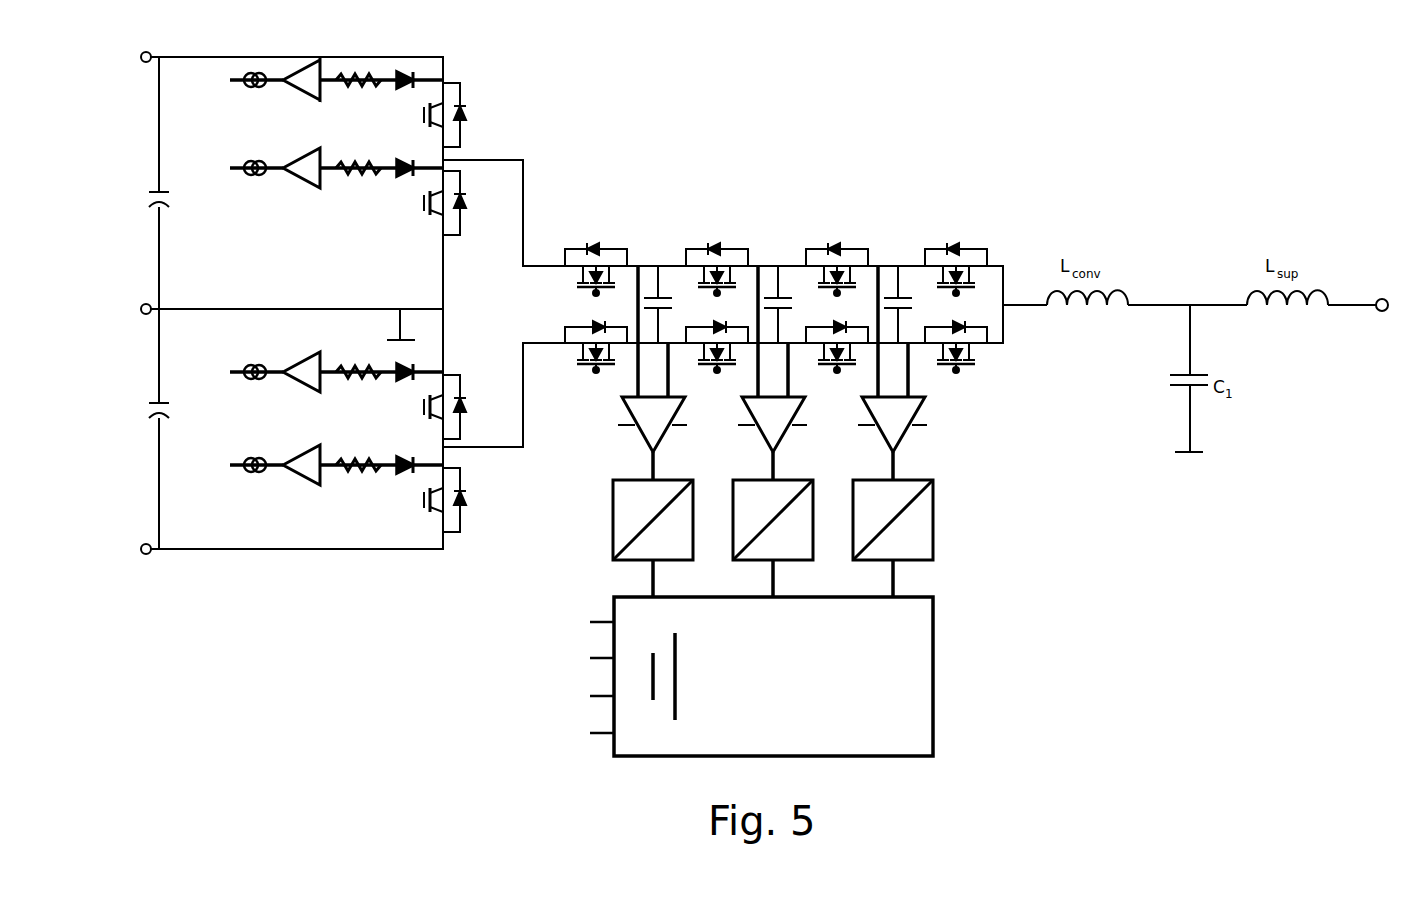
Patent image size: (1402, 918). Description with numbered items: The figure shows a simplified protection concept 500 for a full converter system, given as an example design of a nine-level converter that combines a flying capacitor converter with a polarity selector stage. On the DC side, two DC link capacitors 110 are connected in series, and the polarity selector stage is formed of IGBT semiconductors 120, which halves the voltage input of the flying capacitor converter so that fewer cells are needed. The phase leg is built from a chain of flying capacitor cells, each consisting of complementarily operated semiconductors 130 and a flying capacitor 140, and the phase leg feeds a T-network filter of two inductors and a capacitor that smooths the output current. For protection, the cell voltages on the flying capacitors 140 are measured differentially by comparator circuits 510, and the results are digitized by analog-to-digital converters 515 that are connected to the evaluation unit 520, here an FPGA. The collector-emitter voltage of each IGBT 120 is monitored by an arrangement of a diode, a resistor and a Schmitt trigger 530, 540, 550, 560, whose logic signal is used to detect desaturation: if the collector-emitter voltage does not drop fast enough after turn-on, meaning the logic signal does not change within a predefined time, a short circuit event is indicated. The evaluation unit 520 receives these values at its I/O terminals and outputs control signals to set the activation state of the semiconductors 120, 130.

The DC link capacitor 110 is at (153, 311).
The semiconductors of the polarity selector stage 120 is at (465, 307).
The semiconductors of the flying capacitor cells 130 is at (588, 243).
The flying capacitor 140 is at (794, 304).
The protection concept circuit 500 is at (94, 309).
The comparator circuit 510 is at (764, 373).
The analog-to-digital converter 515 is at (774, 538).
The evaluation unit 520 is at (760, 676).
The Schmitt-trigger, diode and resistor arrangement 530 is at (315, 88).
The Schmitt-trigger, diode and resistor arrangement 540 is at (315, 178).
The Schmitt-trigger, diode and resistor arrangement 550 is at (315, 379).
The Schmitt-trigger, diode and resistor arrangement 560 is at (315, 473).